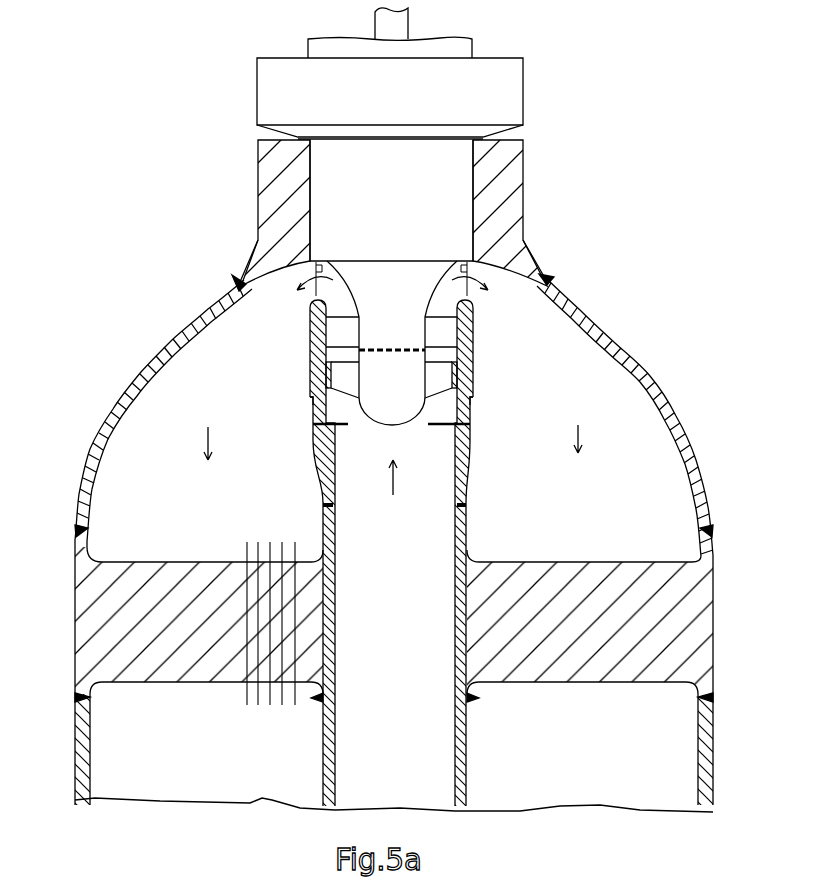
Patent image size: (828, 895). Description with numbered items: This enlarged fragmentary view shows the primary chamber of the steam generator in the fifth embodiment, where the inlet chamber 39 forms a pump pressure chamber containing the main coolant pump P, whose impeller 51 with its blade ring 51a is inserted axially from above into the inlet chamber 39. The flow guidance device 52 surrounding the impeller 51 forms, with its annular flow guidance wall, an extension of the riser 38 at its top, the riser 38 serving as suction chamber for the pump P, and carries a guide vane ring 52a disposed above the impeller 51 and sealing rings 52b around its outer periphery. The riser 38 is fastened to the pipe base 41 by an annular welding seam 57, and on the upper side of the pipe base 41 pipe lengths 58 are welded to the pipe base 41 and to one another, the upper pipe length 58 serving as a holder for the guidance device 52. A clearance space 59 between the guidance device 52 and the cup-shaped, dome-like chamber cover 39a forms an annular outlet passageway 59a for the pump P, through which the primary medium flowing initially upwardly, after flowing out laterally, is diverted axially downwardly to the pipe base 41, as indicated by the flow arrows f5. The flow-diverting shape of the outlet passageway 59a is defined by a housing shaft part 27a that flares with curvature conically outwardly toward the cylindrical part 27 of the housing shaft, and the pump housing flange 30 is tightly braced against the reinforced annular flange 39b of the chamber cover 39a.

The pump housing flange 30 is at (502, 97).
The cylindrical part of the housing shaft 27 is at (334, 192).
The reinforced annular flange 39b is at (515, 188).
The housing shaft part 27a is at (382, 290).
The clearance space 59 is at (322, 268).
The annular outlet passageway 59a is at (465, 268).
The chamber cover 39a is at (602, 328).
The inlet chamber 39 is at (542, 500).
The pipe base 41 is at (577, 655).
The riser 38 is at (467, 747).
The annular welding seam 57 is at (470, 697).
The flow guidance device 52 is at (468, 368).
The guide vane ring 52a is at (338, 330).
The sealing rings 52b is at (466, 402).
The pipe lengths 58 is at (322, 507).
The impeller 51 is at (393, 426).
The blade ring 51a is at (343, 378).
The main coolant pump P is at (517, 348).
The flow arrows f5 is at (312, 296).